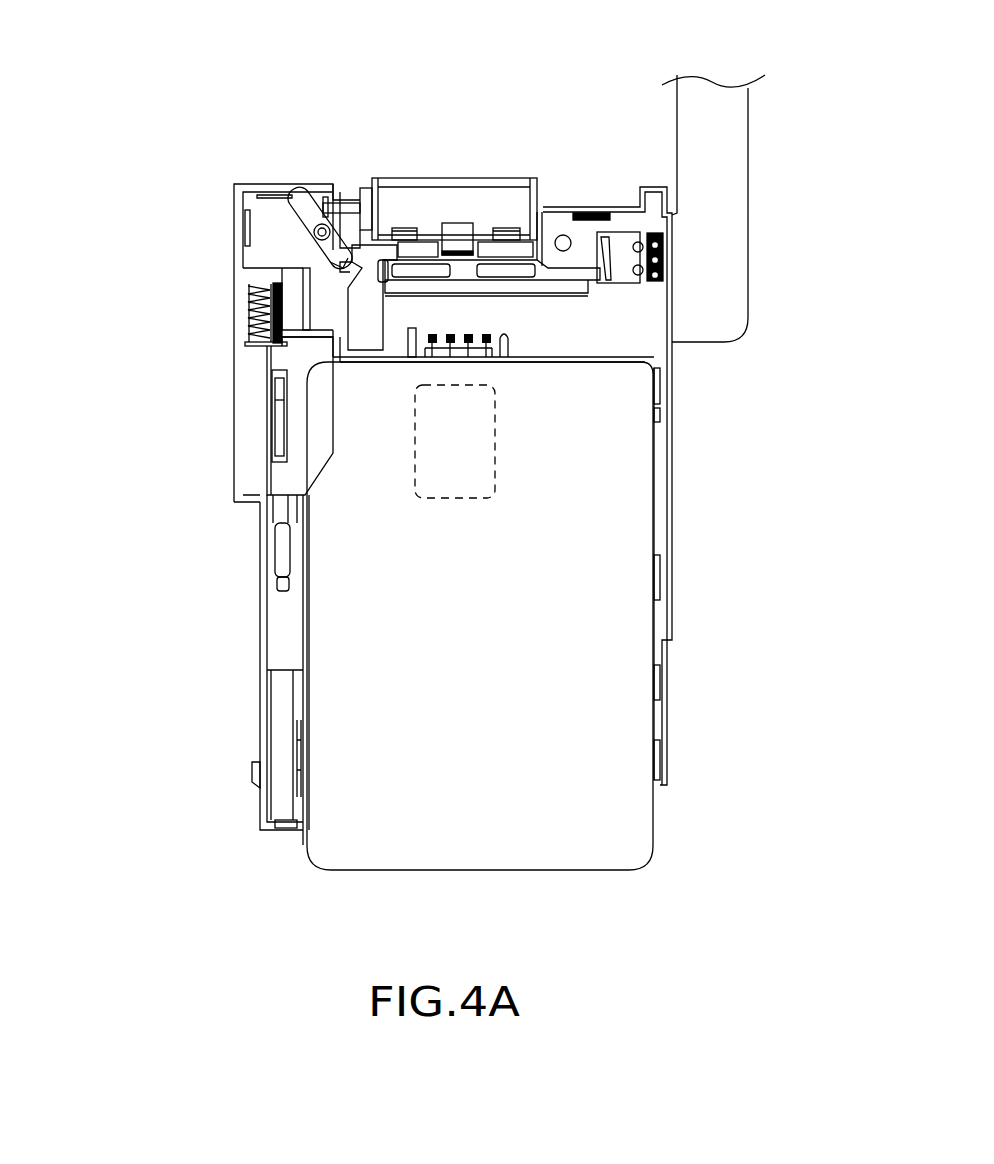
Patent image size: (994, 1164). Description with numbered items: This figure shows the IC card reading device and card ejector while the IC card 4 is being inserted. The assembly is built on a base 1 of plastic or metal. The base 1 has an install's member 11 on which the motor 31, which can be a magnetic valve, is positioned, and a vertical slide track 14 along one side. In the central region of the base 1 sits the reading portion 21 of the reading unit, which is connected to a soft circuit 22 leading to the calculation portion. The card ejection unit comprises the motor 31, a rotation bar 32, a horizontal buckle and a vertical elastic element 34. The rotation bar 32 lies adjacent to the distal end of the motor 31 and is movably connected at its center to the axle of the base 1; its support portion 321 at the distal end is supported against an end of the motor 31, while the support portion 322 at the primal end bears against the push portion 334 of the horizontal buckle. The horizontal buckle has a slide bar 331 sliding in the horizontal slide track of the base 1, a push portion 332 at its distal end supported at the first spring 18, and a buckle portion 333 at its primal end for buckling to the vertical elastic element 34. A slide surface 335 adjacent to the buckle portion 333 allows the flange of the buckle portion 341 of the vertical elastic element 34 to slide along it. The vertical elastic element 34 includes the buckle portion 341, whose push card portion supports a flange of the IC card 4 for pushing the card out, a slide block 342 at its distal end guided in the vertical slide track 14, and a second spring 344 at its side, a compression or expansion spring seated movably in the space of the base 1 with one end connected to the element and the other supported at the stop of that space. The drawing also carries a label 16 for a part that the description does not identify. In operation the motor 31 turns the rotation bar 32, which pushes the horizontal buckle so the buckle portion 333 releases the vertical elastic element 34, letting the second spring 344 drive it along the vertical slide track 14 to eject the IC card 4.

The base 1 is at (670, 684).
The IC card 4 is at (593, 808).
The install's member 11 is at (457, 230).
The vertical slide track 14 is at (283, 538).
The lower plate 16 is at (510, 293).
The first spring 18 is at (605, 265).
The reading portion 21 is at (458, 357).
The soft circuit 22 is at (717, 130).
The motor 31 is at (408, 202).
The rotation bar 32 is at (302, 200).
The support portion 321 is at (322, 222).
The support portion 322 is at (333, 252).
The slide bar 331 is at (477, 258).
The push portion 332 is at (585, 265).
The buckle portion 333 is at (345, 270).
The push portion 334 is at (345, 190).
The slide surface 335 is at (347, 308).
The vertical elastic element 34 is at (257, 462).
The buckle portion 341 is at (257, 302).
The slide block 342 is at (278, 588).
The second spring 344 is at (330, 331).